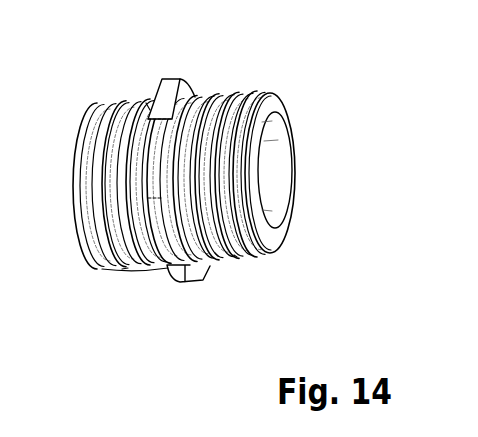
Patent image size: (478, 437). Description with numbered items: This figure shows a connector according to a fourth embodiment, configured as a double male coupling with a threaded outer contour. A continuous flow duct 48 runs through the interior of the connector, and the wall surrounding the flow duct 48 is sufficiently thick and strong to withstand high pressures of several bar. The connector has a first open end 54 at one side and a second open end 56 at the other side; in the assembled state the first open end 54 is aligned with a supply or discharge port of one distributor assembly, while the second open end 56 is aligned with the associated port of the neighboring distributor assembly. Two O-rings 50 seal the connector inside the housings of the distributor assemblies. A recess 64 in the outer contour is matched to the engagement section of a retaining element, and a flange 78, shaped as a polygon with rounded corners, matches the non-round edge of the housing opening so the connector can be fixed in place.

The flow duct 48 is at (264, 151).
The O-ring 50 is at (128, 268).
The first open end 54 is at (101, 106).
The second open end 56 is at (224, 100).
The recess 64 is at (146, 103).
The flange 78 is at (179, 283).